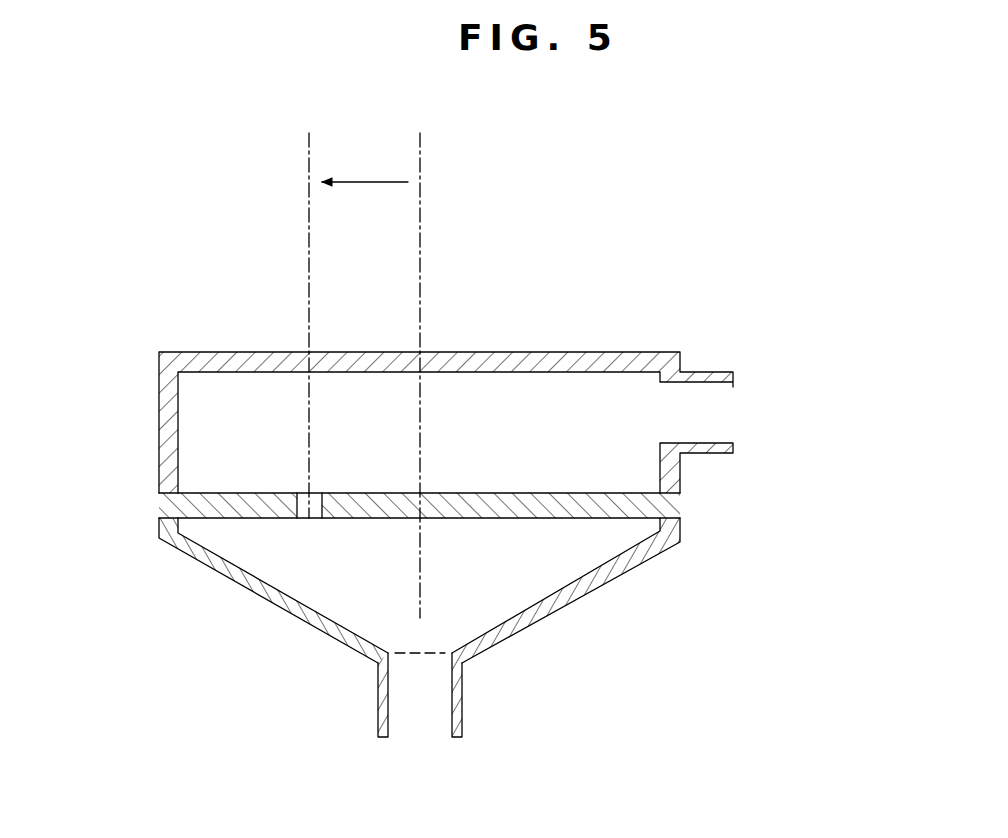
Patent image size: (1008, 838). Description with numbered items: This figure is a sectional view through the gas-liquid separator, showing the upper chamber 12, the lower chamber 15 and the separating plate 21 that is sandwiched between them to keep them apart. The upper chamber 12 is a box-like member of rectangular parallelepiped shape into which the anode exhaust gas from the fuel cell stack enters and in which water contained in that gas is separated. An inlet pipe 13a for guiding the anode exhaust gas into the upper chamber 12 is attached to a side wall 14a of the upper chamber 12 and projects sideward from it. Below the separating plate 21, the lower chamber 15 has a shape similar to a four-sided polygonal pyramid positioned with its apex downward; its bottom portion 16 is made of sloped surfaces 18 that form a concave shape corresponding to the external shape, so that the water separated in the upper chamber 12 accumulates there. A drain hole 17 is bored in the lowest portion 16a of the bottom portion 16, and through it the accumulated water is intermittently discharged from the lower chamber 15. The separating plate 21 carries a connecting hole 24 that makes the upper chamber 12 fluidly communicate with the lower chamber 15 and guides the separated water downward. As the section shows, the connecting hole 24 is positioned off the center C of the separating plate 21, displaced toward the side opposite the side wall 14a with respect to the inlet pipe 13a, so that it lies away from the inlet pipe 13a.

The upper chamber 12 is at (202, 351).
The inlet pipe 13a is at (700, 372).
The side wall 14a is at (158, 430).
The separating plate 21 is at (682, 510).
The connecting hole 24 is at (301, 484).
The center of the separating plate C is at (424, 485).
The lower chamber 15 is at (443, 595).
The bottom portion 16 is at (421, 595).
The sloped surfaces 18 is at (279, 585).
The lowest portion 16a is at (437, 648).
The drain hole 17 is at (408, 644).